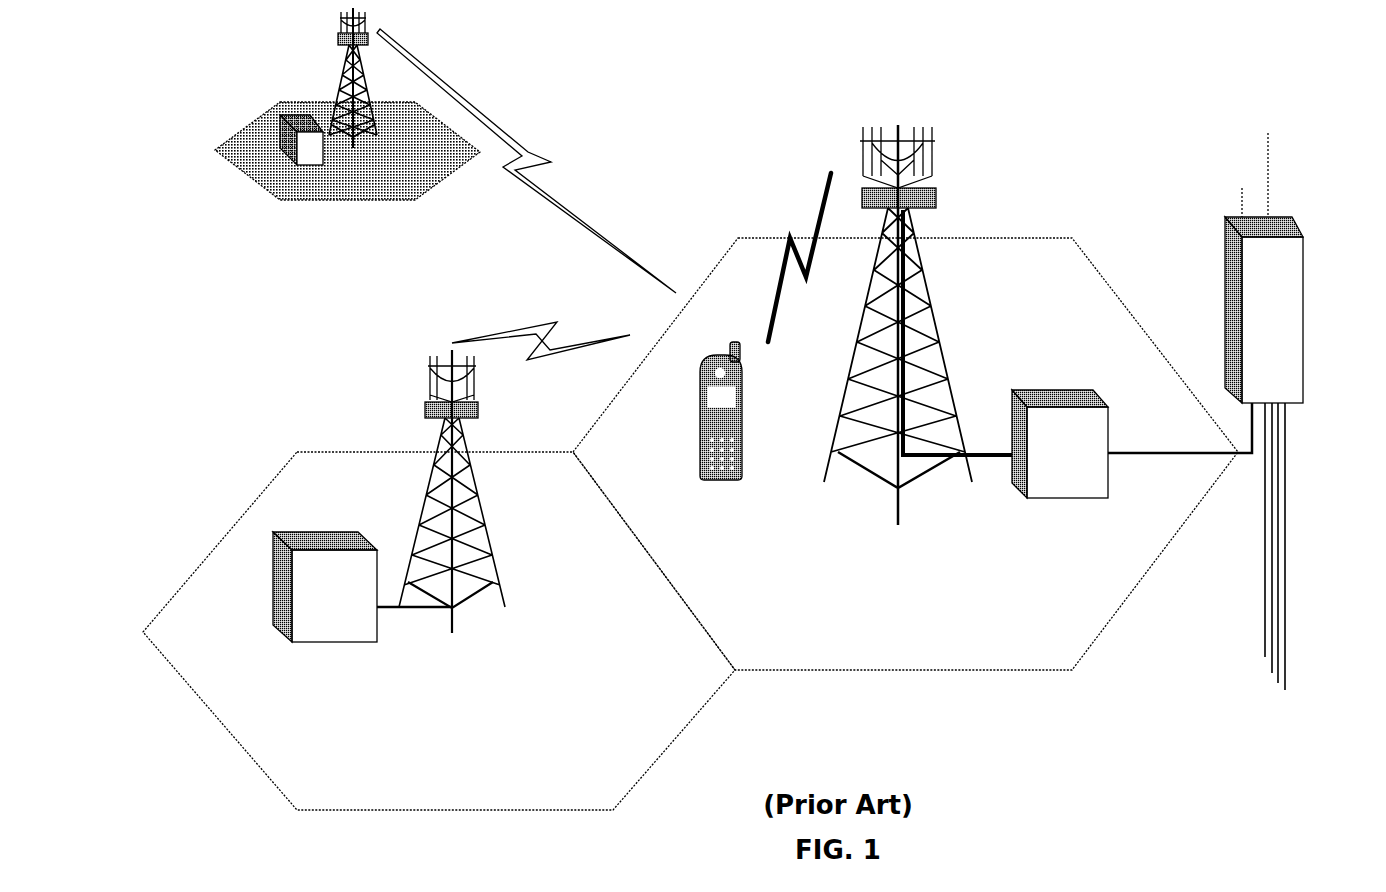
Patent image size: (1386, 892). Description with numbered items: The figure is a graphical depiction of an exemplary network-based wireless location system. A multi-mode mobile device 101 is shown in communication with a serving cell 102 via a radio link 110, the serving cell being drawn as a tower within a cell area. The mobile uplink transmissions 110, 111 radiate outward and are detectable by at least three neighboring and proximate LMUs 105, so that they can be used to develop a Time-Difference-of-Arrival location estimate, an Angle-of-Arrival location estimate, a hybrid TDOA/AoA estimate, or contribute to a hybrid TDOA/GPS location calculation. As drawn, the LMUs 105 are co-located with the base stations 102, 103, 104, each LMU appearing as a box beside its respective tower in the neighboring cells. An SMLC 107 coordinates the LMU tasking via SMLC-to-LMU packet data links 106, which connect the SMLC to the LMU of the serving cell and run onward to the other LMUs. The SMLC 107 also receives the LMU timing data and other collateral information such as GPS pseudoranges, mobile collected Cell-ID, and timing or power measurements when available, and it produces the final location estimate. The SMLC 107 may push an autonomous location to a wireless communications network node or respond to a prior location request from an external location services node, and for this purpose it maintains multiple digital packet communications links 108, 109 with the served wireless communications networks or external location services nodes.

The multi-mode mobile device 101 is at (721, 425).
The serving cell 102 is at (918, 342).
The base station 103 is at (452, 517).
The base station 104 is at (354, 93).
The LMU 105 is at (307, 148).
The SMLC-to-LMU packet data link 106 is at (1209, 589).
The SMLC 107 is at (1244, 310).
The digital packet communications link 108 is at (1240, 187).
The digital packet communications link 109 is at (1265, 159).
The radio link 110 is at (791, 257).
The mobile uplink transmissions 111 is at (526, 194).